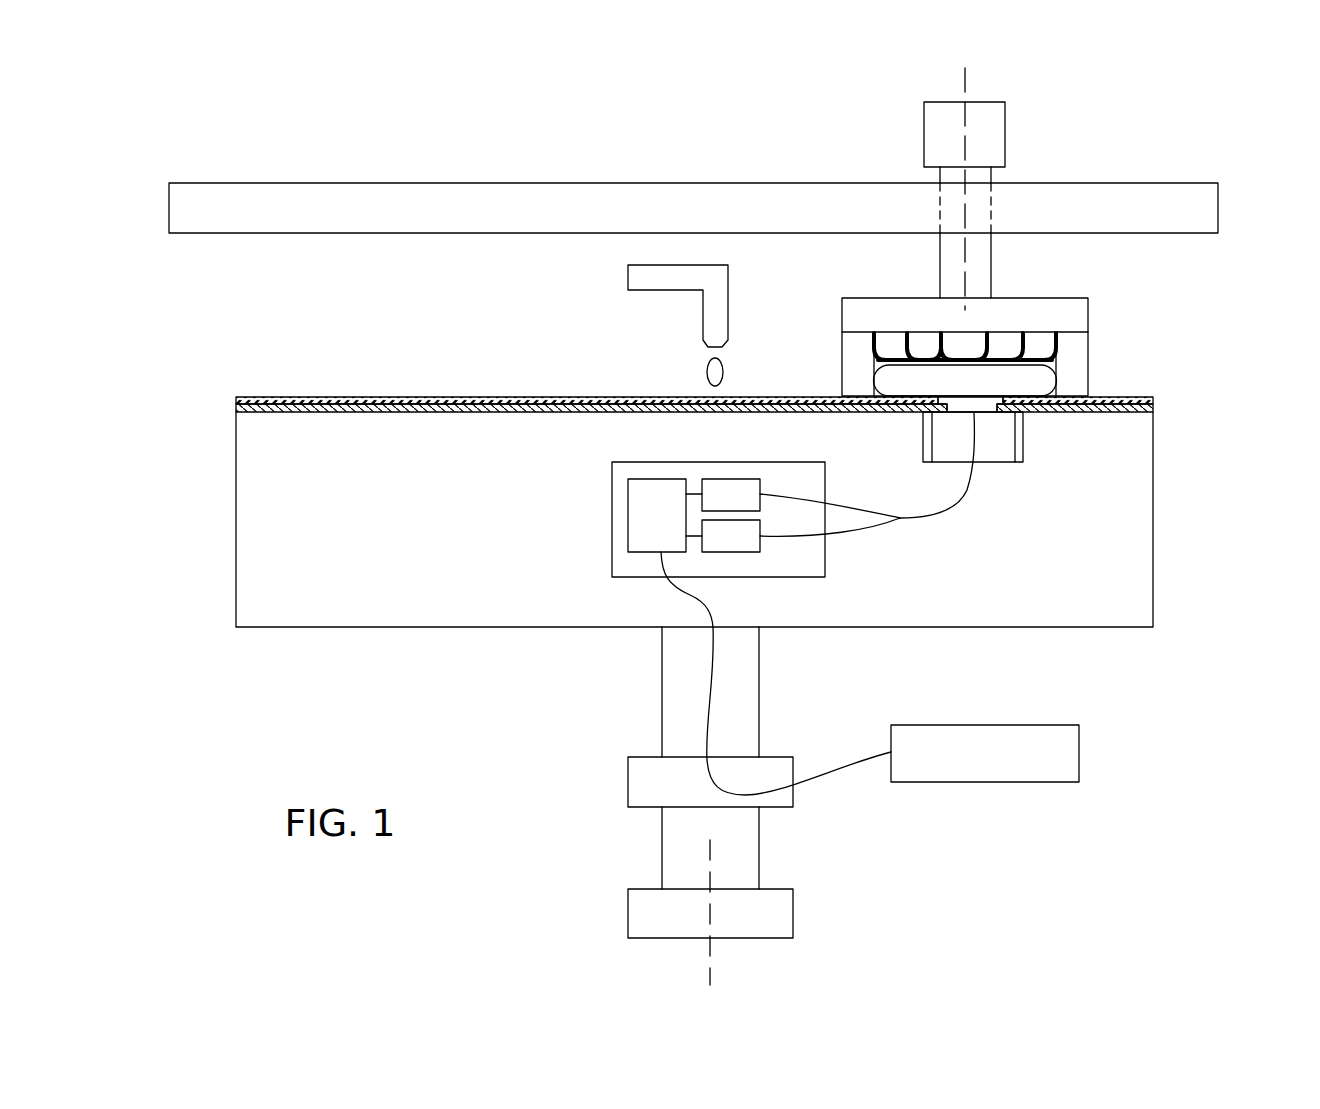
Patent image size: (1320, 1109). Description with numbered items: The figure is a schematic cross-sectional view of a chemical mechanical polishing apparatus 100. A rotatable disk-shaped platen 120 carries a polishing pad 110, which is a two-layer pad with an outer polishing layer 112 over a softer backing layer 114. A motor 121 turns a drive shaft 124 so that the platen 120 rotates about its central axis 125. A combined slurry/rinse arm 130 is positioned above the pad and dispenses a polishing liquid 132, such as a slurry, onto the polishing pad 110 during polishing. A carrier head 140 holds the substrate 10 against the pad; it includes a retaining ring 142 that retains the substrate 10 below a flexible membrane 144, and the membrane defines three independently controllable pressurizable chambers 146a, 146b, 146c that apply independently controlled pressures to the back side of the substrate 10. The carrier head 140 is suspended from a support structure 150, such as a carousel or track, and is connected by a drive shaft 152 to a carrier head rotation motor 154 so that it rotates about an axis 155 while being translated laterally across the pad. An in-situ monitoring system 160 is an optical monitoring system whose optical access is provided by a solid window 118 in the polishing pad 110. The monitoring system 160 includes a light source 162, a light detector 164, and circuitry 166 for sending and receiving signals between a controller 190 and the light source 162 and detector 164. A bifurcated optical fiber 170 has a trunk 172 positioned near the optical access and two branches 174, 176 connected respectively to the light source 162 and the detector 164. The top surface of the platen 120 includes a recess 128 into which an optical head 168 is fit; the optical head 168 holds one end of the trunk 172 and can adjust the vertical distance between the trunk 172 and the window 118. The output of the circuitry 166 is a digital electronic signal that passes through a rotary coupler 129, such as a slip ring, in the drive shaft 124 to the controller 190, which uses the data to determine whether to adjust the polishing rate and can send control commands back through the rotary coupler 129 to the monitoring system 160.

The polishing apparatus 100 is at (226, 142).
The substrate 10 is at (964, 380).
The polishing pad 110 is at (744, 393).
The outer polishing layer 112 is at (1155, 398).
The backing layer 114 is at (1155, 411).
The solid window 118 is at (978, 412).
The platen 120 is at (1154, 549).
The motor 121 is at (793, 923).
The drive shaft 124 is at (760, 700).
The axis 125 is at (712, 962).
The recess 128 is at (923, 433).
The rotary coupler 129 is at (628, 792).
The slurry/rinse arm 130 is at (703, 310).
The polishing liquid 132 is at (707, 372).
The carrier head 140 is at (825, 347).
The retaining ring 142 is at (1089, 365).
The flexible membrane 144 is at (1023, 365).
The pressurizable chamber 146a is at (966, 347).
The pressurizable chamber 146b is at (1007, 348).
The pressurizable chamber 146c is at (1040, 348).
The support structure 150 is at (1185, 184).
The drive shaft 152 is at (950, 272).
The carrier head rotation motor 154 is at (924, 145).
The axis 155 is at (966, 81).
The in-situ monitoring system 160 is at (661, 574).
The light source 162 is at (731, 495).
The light detector 164 is at (731, 536).
The circuitry 166 is at (657, 515).
The optical head 168 is at (1018, 445).
The bifurcated optical fiber 170 is at (884, 514).
The trunk 172 is at (946, 515).
The branch 174 is at (791, 501).
The branch 176 is at (787, 538).
The controller 190 is at (1066, 782).